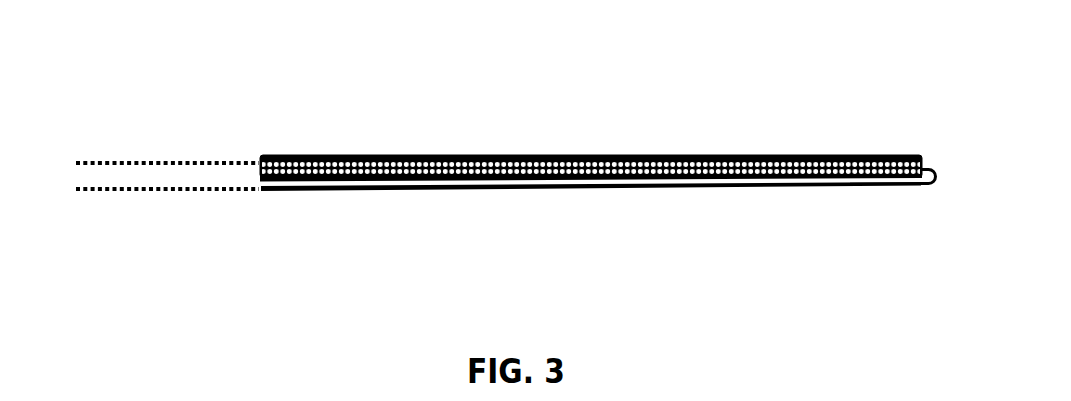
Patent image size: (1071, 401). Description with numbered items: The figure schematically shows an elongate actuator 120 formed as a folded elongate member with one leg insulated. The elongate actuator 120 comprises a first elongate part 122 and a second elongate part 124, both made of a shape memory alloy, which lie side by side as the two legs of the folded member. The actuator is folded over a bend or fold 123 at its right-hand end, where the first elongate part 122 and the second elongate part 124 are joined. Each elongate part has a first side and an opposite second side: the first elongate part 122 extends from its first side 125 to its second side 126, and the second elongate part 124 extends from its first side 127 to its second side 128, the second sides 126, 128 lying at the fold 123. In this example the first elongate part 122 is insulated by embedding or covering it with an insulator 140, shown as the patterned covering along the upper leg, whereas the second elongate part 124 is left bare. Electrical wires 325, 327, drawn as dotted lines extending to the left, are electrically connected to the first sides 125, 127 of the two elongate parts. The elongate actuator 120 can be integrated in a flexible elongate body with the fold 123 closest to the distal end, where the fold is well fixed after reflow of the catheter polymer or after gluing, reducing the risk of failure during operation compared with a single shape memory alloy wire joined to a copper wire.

The elongate actuator 120 is at (753, 88).
The first elongate part 122 is at (442, 172).
The second elongate part 124 is at (508, 185).
The insulator 140 is at (607, 155).
The first side of first elongate part 125 is at (292, 157).
The second side of first elongate part 126 is at (872, 157).
The first side of second elongate part 127 is at (297, 188).
The second side of second elongate part 128 is at (872, 188).
The fold 123 is at (935, 185).
The electrical wire 325 is at (205, 160).
The electrical wire 327 is at (195, 188).